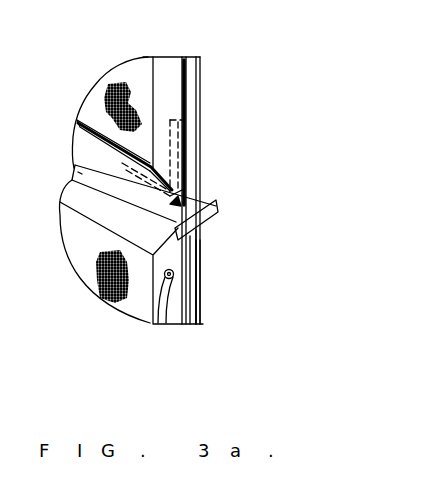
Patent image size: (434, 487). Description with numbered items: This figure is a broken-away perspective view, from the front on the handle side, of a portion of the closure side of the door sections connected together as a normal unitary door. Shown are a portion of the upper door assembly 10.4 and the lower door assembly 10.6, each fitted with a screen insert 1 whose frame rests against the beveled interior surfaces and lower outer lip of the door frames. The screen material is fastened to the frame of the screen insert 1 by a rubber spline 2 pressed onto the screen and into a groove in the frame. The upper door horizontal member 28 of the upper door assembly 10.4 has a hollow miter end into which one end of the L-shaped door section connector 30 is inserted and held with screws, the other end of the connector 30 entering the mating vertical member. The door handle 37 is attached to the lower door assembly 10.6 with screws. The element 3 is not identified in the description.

The screen insert 1 is at (132, 78).
The rubber spline 2 is at (168, 85).
The guide strip 3 is at (218, 212).
The upper door assembly 10.4 is at (200, 120).
The lower door assembly 10.6 is at (200, 295).
The upper door horizontal member 28 is at (92, 152).
The L-shaped door section connector 30 is at (178, 188).
The door handle 37 is at (167, 302).